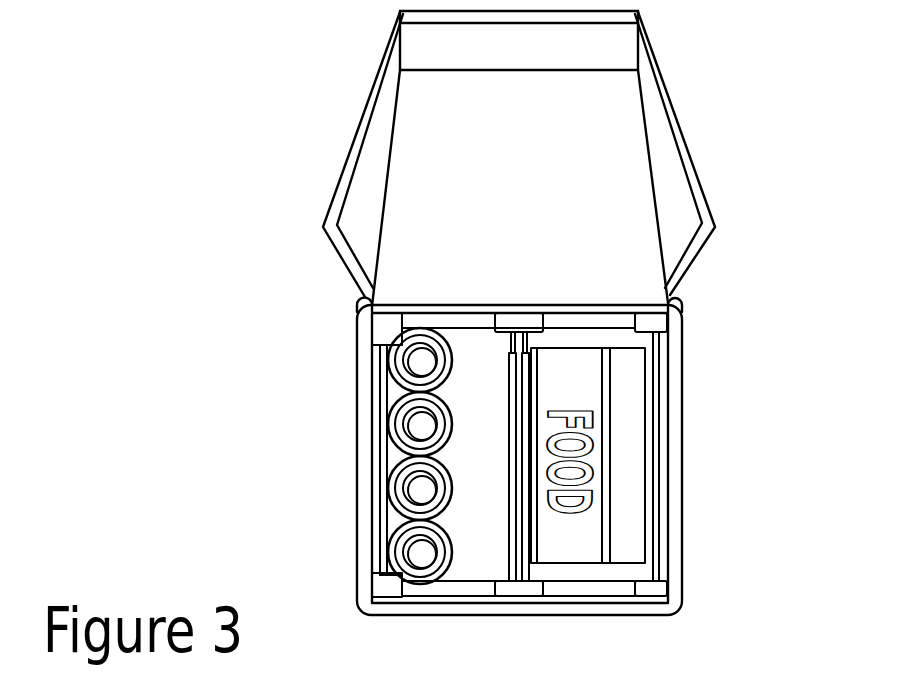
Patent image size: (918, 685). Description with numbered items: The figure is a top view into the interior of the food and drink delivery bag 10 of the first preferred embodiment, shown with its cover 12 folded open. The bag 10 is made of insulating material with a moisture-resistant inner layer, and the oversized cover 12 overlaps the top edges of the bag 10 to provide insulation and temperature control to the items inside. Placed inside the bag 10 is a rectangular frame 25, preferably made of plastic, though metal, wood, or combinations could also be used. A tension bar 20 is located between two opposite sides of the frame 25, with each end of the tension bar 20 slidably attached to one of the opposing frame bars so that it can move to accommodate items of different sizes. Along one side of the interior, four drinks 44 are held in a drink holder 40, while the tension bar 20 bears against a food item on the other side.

The delivery bag 10 is at (673, 518).
The cover 12 is at (567, 143).
The tension bar 20 is at (520, 368).
The frame 25 is at (473, 591).
The drink holder 40 is at (387, 532).
The drinks 44 is at (418, 365).